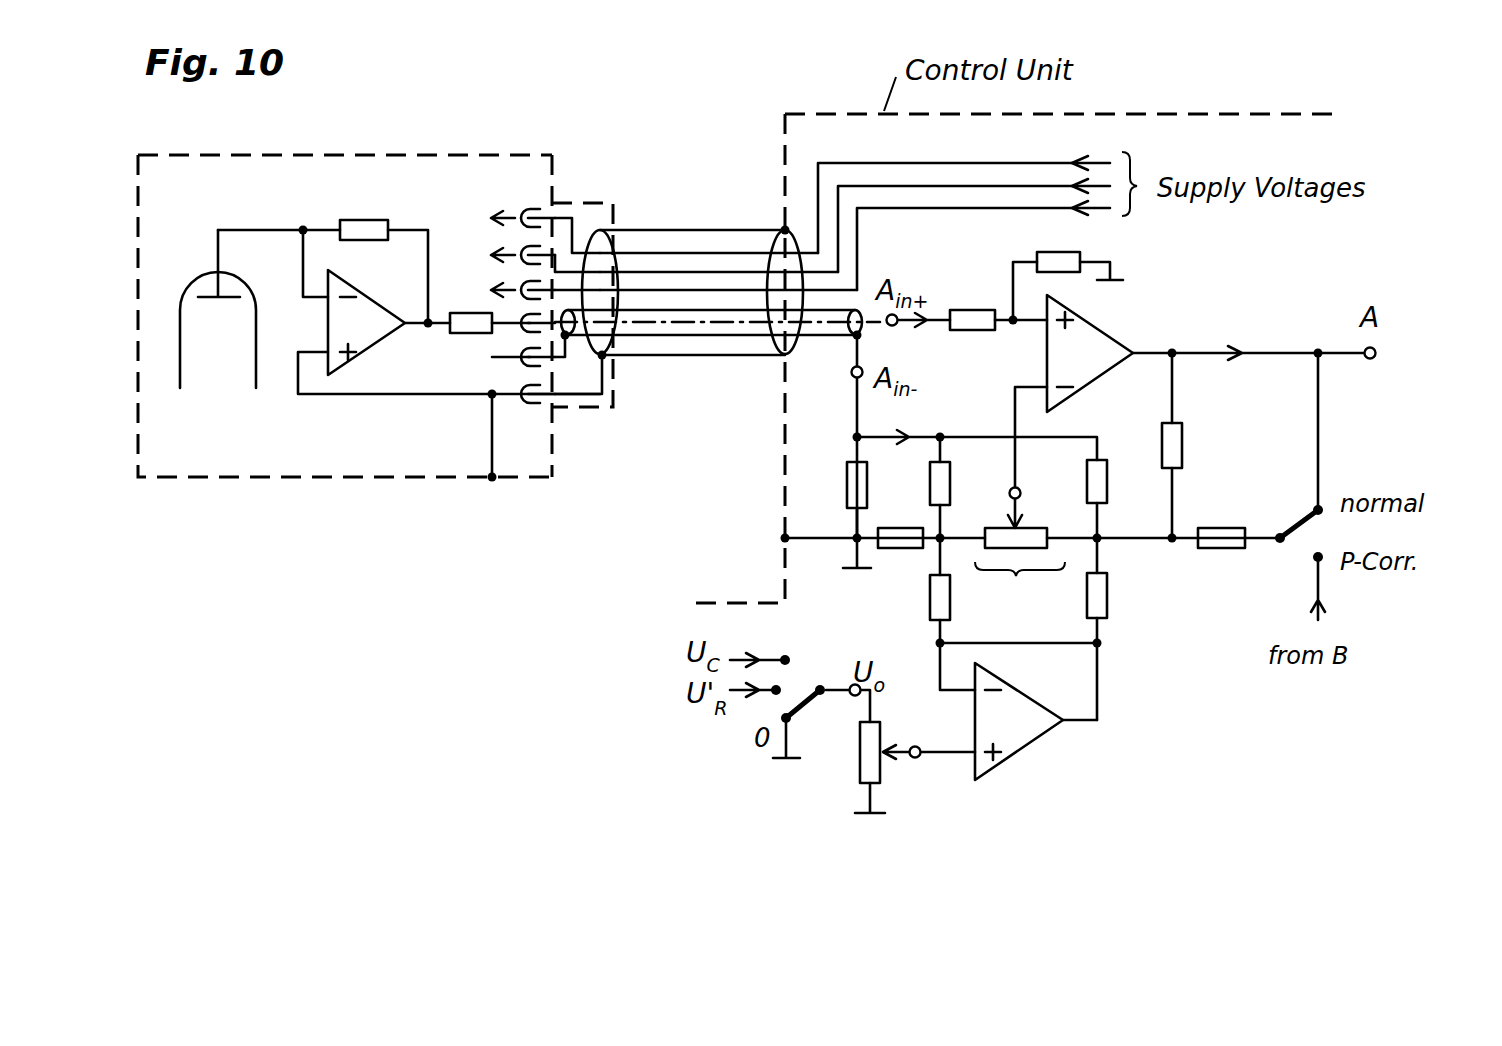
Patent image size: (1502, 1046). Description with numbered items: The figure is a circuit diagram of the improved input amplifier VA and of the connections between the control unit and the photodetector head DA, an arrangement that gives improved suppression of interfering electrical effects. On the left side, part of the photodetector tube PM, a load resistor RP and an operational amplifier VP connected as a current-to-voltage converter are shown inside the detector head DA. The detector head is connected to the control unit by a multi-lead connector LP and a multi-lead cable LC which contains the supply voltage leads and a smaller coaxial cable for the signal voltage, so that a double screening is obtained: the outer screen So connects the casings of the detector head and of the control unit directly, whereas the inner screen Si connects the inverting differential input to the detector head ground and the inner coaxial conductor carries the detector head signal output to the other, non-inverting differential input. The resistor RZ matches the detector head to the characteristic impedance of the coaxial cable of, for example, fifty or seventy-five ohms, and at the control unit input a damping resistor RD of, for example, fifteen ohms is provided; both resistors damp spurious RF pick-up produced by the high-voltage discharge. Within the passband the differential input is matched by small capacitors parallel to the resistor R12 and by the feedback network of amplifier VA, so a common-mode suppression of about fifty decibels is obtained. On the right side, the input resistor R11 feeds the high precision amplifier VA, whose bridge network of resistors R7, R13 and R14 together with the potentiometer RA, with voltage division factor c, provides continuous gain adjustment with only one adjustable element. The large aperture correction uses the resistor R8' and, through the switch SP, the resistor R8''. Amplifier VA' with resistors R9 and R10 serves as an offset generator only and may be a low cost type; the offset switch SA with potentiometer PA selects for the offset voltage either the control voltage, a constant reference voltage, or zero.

The photodetector head DA is at (362, 152).
The multi-lead connector LP is at (573, 130).
The photodetector tube PM is at (208, 282).
The load resistor RP is at (364, 213).
The operational amplifier VP is at (366, 314).
The matching resistor RZ is at (460, 348).
The multi-lead cable LC is at (775, 188).
The outer screen So is at (711, 355).
The inner screen Si is at (717, 352).
The input resistor R11 is at (974, 303).
The input resistor R12 is at (1051, 268).
The input amplifier VA is at (1113, 344).
The damping resistor RD is at (835, 482).
The resistor R7 is at (900, 563).
The resistor R13 is at (966, 481).
The potentiometer RA is at (1020, 536).
The resistor R14 is at (1124, 479).
The resistor R8' is at (1196, 439).
The resistor R8'' is at (1221, 562).
The resistor R9 is at (960, 610).
The resistor R10 is at (1124, 609).
The switch SP is at (1293, 521).
The offset generator amplifier VA' is at (1029, 728).
The offset potentiometer PA is at (915, 751).
The offset switch SA is at (789, 691).